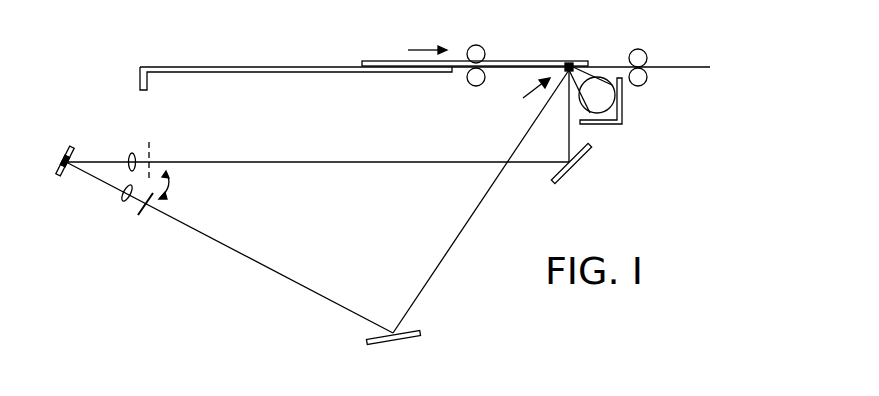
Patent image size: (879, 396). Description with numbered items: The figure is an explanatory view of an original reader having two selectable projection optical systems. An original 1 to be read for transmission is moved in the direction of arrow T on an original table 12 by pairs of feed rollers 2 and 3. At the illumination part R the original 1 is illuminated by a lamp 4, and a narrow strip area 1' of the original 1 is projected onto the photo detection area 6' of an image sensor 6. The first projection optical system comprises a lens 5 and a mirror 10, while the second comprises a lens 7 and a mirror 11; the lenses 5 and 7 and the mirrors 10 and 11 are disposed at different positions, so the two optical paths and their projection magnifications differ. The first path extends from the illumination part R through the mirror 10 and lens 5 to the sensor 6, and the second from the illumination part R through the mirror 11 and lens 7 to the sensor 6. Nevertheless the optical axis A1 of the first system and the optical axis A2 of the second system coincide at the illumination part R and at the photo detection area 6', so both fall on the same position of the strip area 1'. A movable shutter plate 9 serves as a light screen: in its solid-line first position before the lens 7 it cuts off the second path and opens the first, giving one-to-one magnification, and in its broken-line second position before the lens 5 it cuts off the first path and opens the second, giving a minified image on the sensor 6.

The original 1 is at (475, 47).
The narrow strip area 1' is at (577, 45).
The feed rollers 2 is at (485, 71).
The feed rollers 3 is at (645, 52).
The lamp 4 is at (608, 98).
The lens 5 is at (130, 152).
The image sensor 6 is at (53, 176).
The photo detection area 6' is at (48, 148).
The lens 7 is at (122, 203).
The shutter plate 9 is at (145, 216).
The mirror 10 is at (566, 176).
The mirror 11 is at (410, 336).
The original table 12 is at (210, 64).
The original forwarding direction T is at (435, 50).
The illumination part R is at (526, 95).
The optical axis of first projection optical system A1 is at (352, 160).
The optical axis of second projection optical system A2 is at (472, 254).